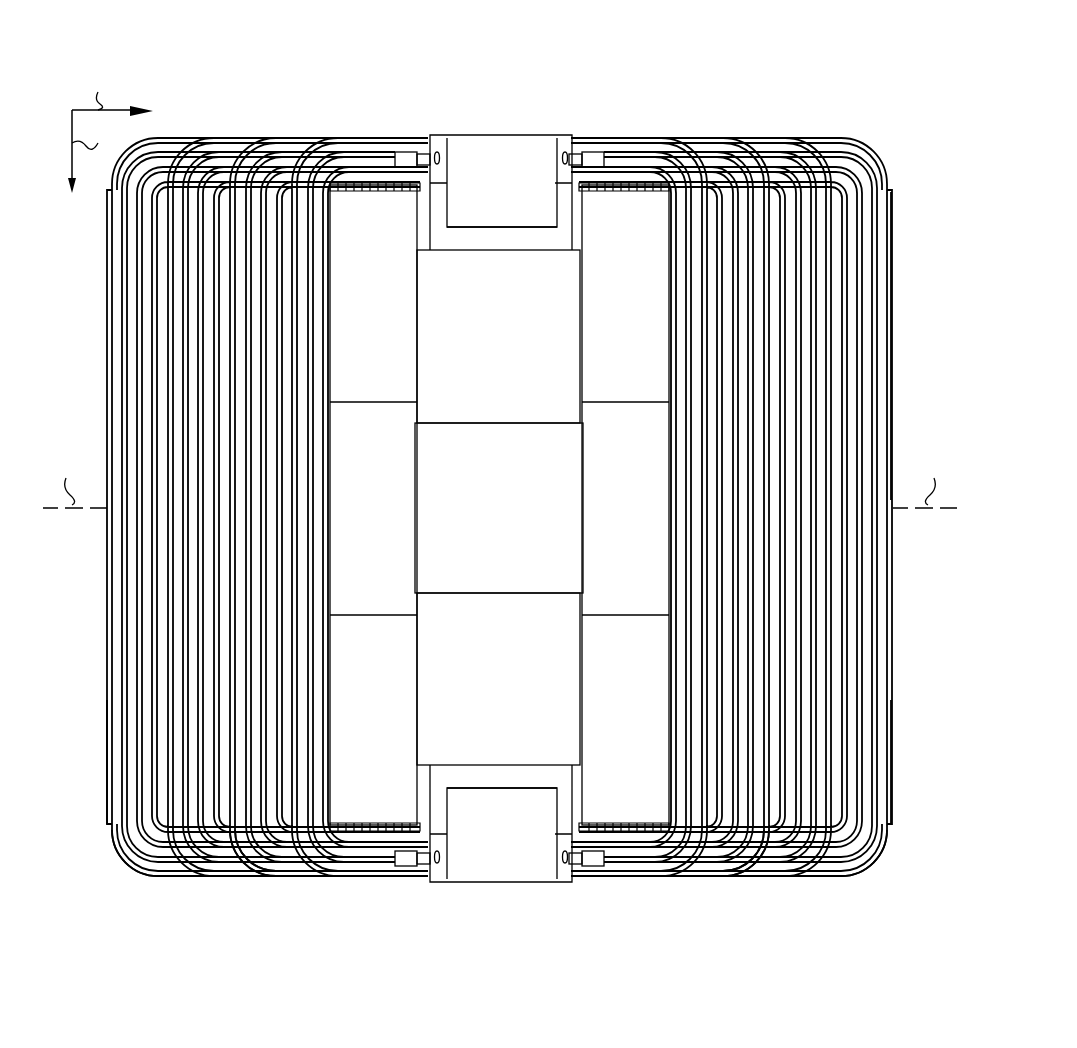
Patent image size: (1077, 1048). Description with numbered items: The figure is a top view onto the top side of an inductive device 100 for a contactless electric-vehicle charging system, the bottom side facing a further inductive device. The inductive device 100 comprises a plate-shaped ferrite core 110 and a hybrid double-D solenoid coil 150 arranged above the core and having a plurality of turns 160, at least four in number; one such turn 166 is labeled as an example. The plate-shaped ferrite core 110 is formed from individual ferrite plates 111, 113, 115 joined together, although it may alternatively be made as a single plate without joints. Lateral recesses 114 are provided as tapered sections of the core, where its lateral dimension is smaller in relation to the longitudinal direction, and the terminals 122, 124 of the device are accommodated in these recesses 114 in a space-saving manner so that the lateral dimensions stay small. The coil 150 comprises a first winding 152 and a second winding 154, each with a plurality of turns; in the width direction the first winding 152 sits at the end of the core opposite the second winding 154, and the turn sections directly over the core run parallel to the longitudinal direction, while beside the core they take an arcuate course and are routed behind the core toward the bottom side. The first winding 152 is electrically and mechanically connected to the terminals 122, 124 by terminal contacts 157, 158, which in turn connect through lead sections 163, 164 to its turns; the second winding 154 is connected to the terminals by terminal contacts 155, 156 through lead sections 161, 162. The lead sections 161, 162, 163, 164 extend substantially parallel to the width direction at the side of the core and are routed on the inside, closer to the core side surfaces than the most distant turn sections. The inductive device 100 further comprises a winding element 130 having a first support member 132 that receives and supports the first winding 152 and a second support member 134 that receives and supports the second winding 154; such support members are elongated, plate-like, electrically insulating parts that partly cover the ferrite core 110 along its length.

The inductive device 100 is at (207, 50).
The plate-shaped ferrite core 110 is at (458, 250).
The ferrite plate 111 is at (520, 345).
The ferrite plate 113 is at (518, 523).
The lateral recess 114 is at (527, 237).
The ferrite plate 115 is at (520, 693).
The terminal 122 is at (520, 201).
The terminal 124 is at (515, 848).
The winding element 130 is at (902, 668).
The first support member 132 is at (893, 792).
The second support member 134 is at (107, 788).
The hybrid double-D solenoid coil 150 is at (773, 130).
The first winding 152 is at (768, 892).
The second winding 154 is at (227, 888).
The terminal contact 155 is at (418, 148).
The terminal contact 156 is at (418, 868).
The terminal contact 157 is at (590, 150).
The terminal contact 158 is at (588, 862).
The plurality of turns 160 is at (108, 867).
The lead section 161 is at (333, 147).
The lead section 162 is at (335, 868).
The lead section 163 is at (648, 150).
The lead section 164 is at (642, 862).
The turn 166 is at (883, 313).